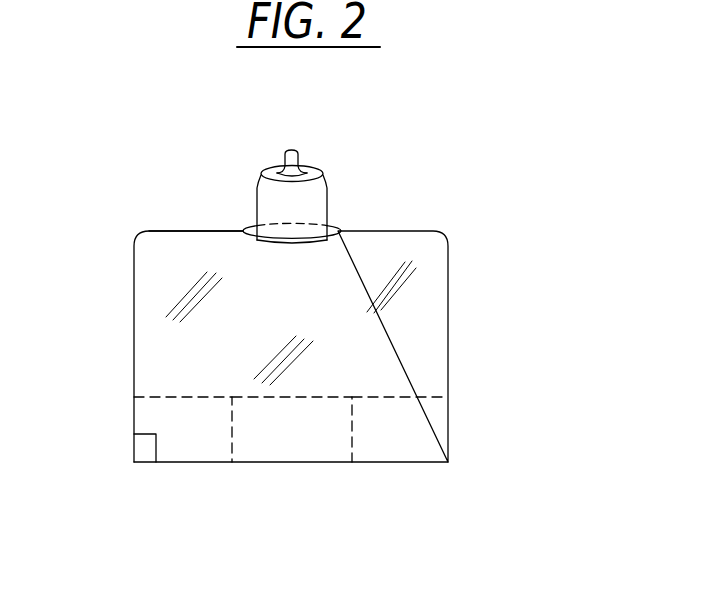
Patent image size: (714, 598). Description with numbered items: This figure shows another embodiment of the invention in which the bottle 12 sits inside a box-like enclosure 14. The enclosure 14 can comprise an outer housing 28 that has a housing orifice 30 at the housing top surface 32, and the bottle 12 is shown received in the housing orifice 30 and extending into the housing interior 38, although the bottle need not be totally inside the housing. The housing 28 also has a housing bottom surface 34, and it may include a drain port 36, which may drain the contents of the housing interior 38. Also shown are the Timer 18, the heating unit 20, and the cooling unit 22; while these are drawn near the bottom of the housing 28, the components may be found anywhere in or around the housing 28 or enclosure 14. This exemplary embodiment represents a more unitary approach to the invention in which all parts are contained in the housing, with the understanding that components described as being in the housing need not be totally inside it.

The bottle 12 is at (328, 192).
The enclosure 14 is at (332, 340).
The Timer 18 is at (185, 462).
The heating unit 20 is at (287, 462).
The cooling unit 22 is at (402, 462).
The outer housing 28 is at (448, 327).
The housing orifice 30 is at (338, 228).
The housing top surface 32 is at (185, 231).
The housing bottom surface 34 is at (435, 463).
The drain port 36 is at (143, 451).
The housing interior 38 is at (332, 230).